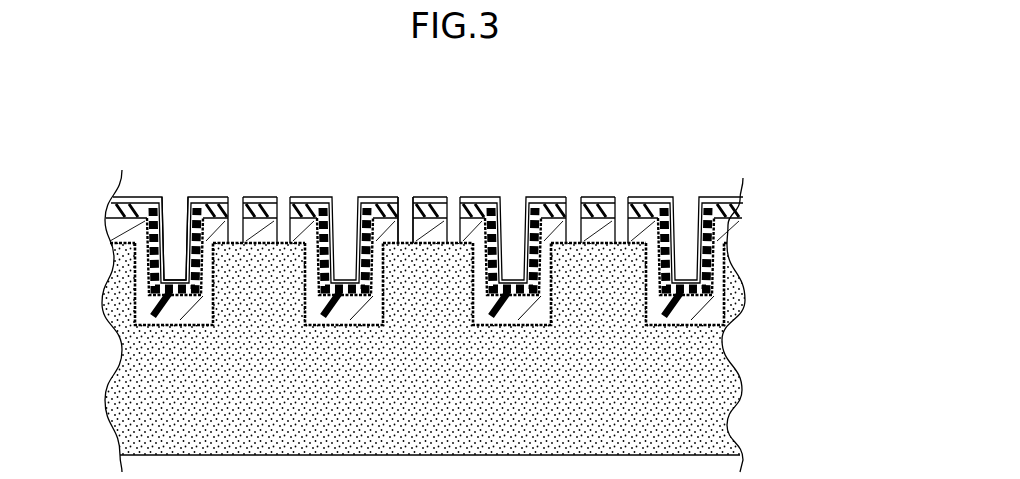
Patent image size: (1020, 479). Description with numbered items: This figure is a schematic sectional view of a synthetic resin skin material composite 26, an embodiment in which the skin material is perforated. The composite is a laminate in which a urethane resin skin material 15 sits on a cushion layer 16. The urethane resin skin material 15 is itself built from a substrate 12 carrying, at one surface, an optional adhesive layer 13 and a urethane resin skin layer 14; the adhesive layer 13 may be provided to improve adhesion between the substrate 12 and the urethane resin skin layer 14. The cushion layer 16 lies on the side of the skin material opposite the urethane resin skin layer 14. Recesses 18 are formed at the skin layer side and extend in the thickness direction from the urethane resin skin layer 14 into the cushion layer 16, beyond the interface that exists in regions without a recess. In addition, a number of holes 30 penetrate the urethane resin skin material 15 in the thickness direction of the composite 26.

The substrate 12 is at (112, 247).
The adhesive layer 13 is at (122, 224).
The urethane resin skin layer 14 is at (101, 216).
The urethane resin skin material 15 is at (456, 232).
The cushion layer 16 is at (755, 237).
The recesses 18 is at (171, 185).
The synthetic resin skin material composite 26 is at (456, 268).
The holes 30 is at (398, 190).